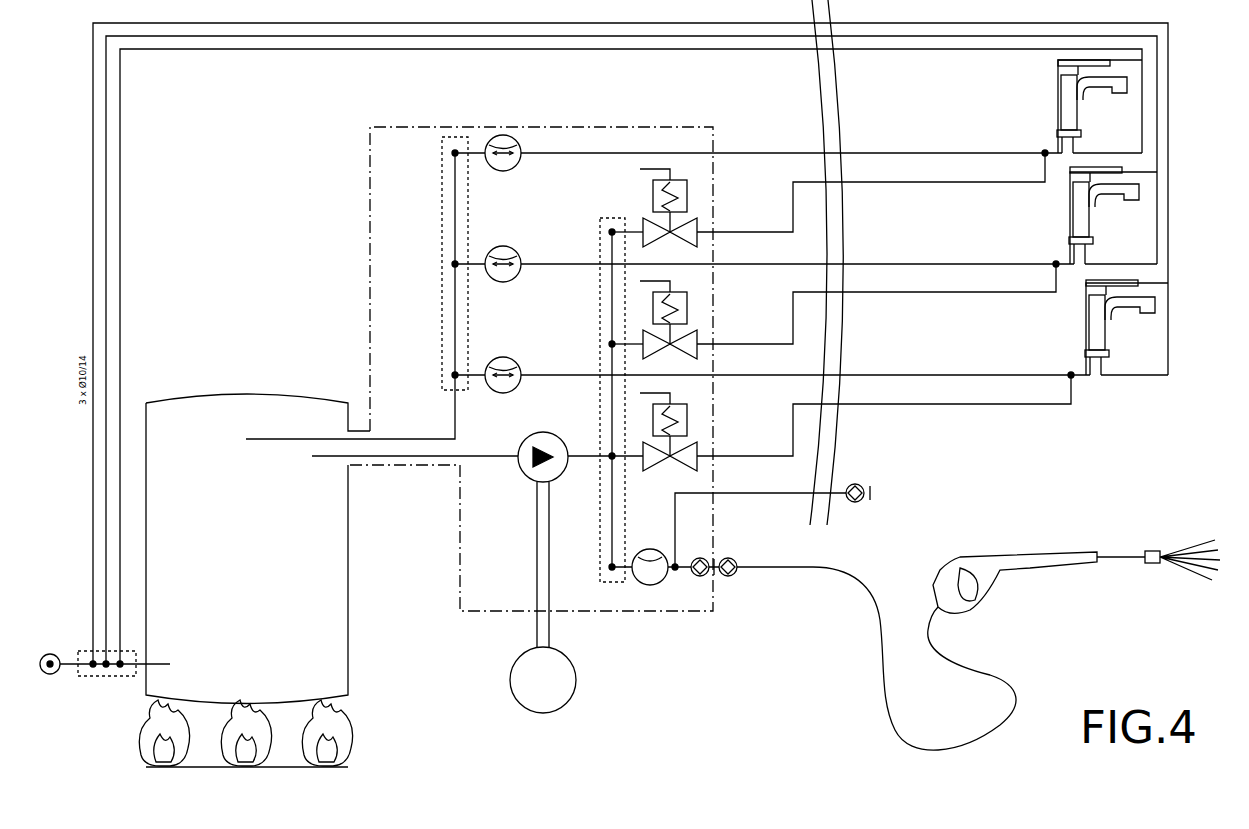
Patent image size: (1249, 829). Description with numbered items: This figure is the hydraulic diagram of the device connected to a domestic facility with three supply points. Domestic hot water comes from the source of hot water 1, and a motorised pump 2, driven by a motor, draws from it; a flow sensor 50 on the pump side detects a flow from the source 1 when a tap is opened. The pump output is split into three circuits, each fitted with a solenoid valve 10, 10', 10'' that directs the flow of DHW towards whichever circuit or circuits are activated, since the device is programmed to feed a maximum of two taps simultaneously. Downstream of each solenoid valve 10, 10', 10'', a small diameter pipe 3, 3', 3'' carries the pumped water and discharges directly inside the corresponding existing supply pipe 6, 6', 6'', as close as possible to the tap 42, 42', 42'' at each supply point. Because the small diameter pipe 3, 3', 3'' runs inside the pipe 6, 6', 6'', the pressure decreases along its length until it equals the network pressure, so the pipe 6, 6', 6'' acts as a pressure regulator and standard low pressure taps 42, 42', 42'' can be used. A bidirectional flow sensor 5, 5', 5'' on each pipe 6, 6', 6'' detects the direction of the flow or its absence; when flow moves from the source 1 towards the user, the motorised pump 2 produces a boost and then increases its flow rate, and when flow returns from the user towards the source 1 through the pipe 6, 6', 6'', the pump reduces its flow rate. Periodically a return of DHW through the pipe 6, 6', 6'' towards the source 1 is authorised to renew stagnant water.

The source of hot water 1 is at (325, 610).
The motorised pump 2 is at (532, 478).
The small diameter pipe 3 is at (872, 191).
The small diameter pipe 3' is at (878, 302).
The small diameter pipe 3'' is at (885, 414).
The bidirectional flow sensor 5 is at (512, 165).
The bidirectional flow sensor 5' is at (514, 276).
The bidirectional flow sensor 5'' is at (516, 387).
The pipe 6 is at (831, 129).
The pipe 6' is at (839, 240).
The pipe 6'' is at (844, 351).
The solenoid valve 10 is at (690, 208).
The solenoid valve 10' is at (692, 320).
The solenoid valve 10'' is at (672, 432).
The faucet 42 is at (1128, 106).
The faucet 42' is at (1136, 215).
The faucet 42'' is at (1146, 327).
The flow sensor 50 is at (660, 583).